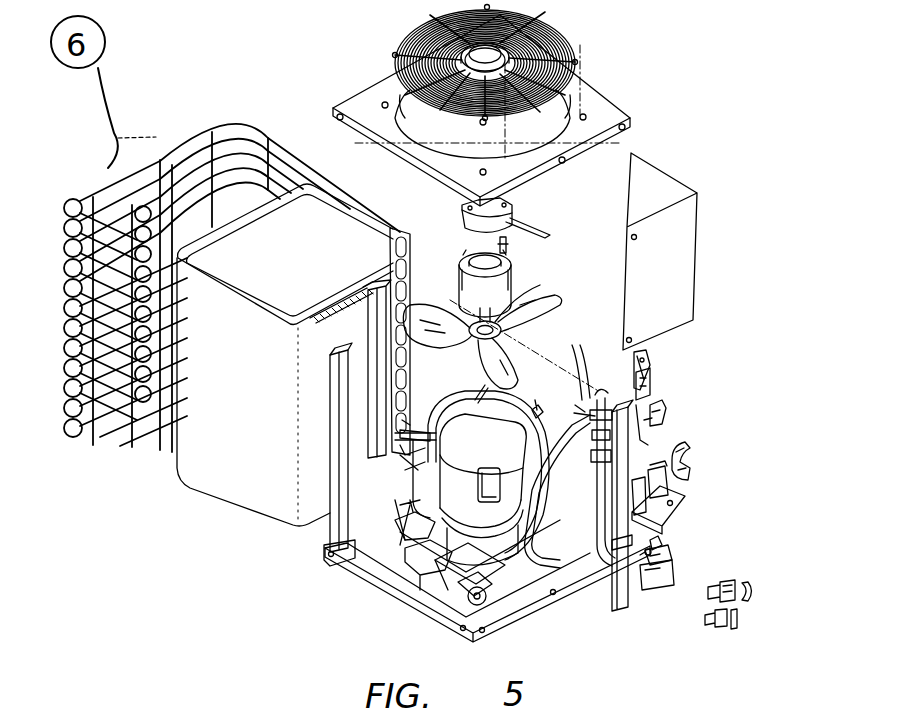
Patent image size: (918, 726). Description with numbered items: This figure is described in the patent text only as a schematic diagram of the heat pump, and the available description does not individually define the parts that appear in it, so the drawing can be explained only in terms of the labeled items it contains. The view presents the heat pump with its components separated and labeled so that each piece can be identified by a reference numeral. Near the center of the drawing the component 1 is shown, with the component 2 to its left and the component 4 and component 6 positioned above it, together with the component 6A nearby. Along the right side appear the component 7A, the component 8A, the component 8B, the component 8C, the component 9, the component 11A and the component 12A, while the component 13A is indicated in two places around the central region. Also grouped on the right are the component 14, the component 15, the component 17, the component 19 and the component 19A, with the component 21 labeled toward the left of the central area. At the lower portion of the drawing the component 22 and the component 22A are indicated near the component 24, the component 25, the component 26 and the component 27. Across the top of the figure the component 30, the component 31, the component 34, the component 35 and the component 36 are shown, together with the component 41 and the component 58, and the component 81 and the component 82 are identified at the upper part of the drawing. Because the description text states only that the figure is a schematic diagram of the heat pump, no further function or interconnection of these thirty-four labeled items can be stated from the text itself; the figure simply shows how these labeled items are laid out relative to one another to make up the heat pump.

The compressor 1 is at (477, 430).
The cover box 2 is at (252, 495).
The fan 4 is at (543, 298).
The fan motor 6 is at (512, 277).
The bracket 6A is at (650, 443).
The relay 7A is at (653, 392).
The fitting 8A is at (660, 543).
The fitting 8B is at (413, 530).
The fitting 8C is at (537, 422).
The clamp 9 is at (693, 460).
The capacitor 11A is at (670, 407).
The control shelf 12A is at (667, 507).
The refrigerant tube 13A is at (415, 392).
The control box 14 is at (660, 483).
The valve 15 is at (430, 578).
The base rail 17 is at (363, 547).
The discharge tube 19 is at (583, 415).
The tube assembly 19A is at (587, 450).
The suction fitting 21 is at (423, 475).
The foot 22 is at (483, 593).
The base plate 22A is at (487, 595).
The connector 24 is at (667, 550).
The terminal block 25 is at (650, 567).
The plug connector 26 is at (730, 593).
The plug connector 27 is at (723, 620).
The top plate 30 is at (593, 100).
The post bracket 31 is at (348, 543).
The side panel 34 is at (660, 234).
The bracket 35 is at (647, 363).
The corner post 36 is at (335, 520).
The pin 41 is at (507, 243).
The motor mount 58 is at (493, 217).
The fan guard 81 is at (563, 35).
The condenser coil 82 is at (179, 135).